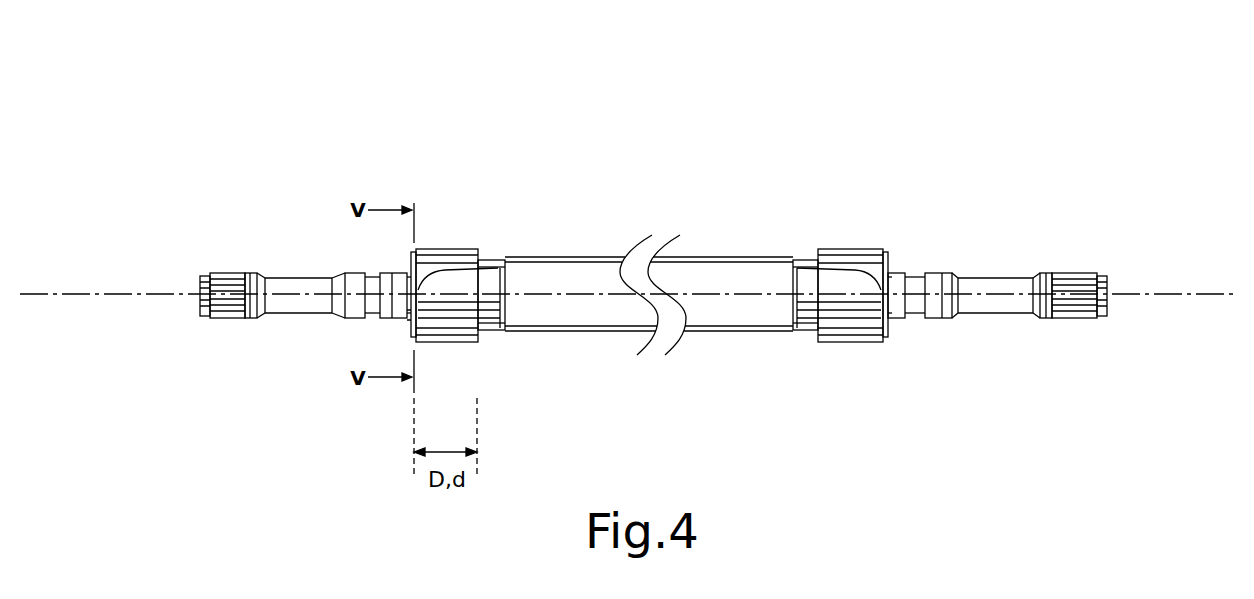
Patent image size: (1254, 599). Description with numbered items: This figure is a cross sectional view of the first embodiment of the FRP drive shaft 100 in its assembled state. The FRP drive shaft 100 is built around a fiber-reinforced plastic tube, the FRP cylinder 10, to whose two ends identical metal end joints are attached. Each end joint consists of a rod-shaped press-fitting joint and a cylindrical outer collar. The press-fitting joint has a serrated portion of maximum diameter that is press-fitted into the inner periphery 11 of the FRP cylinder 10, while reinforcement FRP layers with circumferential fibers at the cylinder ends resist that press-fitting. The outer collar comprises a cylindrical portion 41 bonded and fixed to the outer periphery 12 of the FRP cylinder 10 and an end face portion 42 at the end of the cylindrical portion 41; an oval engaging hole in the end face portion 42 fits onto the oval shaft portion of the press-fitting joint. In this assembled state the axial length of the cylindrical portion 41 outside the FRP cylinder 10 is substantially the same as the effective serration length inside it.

The FRP drive shaft 100 is at (867, 92).
The FRP cylinder 10 is at (697, 181).
The inner periphery 11 is at (578, 331).
The outer periphery 12 is at (568, 257).
The cylindrical portion 41 is at (455, 249).
The end face portion 42 is at (411, 253).